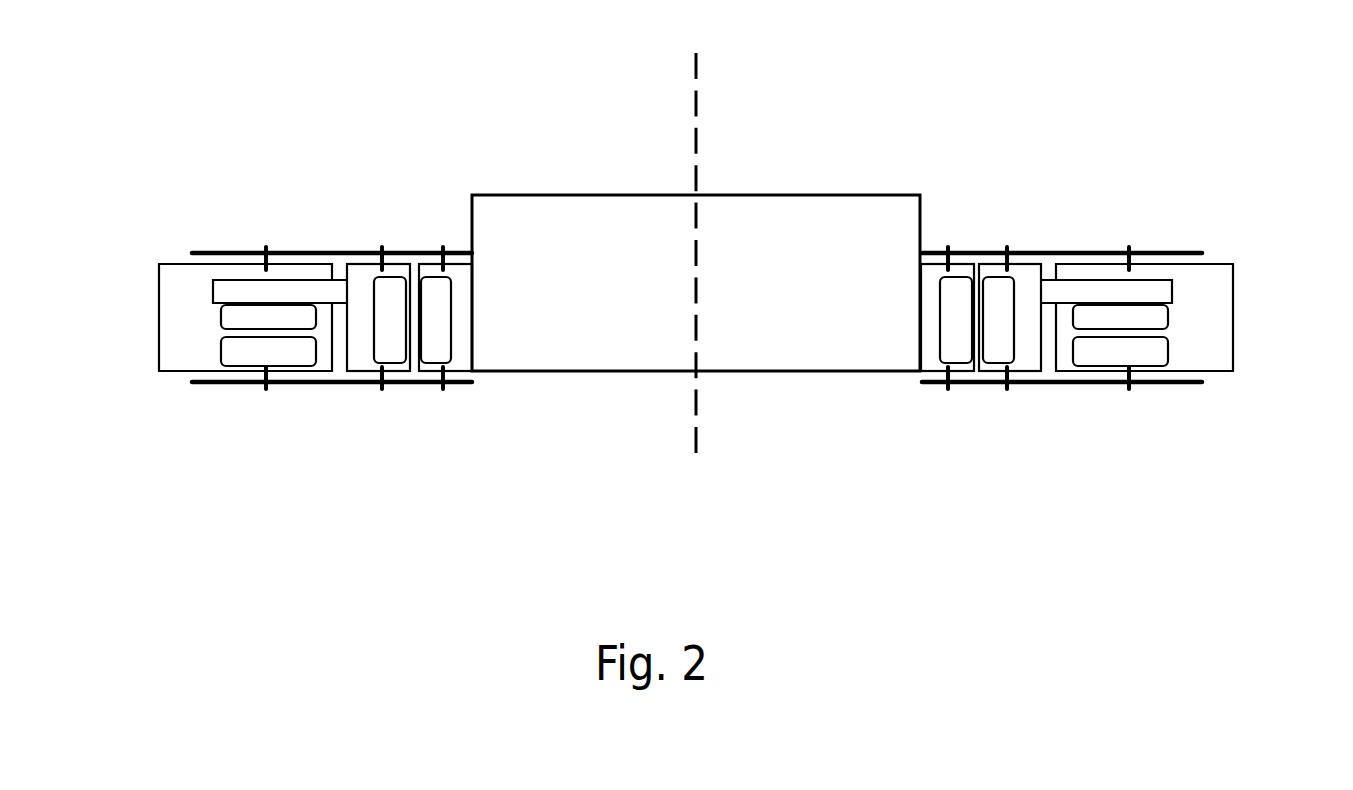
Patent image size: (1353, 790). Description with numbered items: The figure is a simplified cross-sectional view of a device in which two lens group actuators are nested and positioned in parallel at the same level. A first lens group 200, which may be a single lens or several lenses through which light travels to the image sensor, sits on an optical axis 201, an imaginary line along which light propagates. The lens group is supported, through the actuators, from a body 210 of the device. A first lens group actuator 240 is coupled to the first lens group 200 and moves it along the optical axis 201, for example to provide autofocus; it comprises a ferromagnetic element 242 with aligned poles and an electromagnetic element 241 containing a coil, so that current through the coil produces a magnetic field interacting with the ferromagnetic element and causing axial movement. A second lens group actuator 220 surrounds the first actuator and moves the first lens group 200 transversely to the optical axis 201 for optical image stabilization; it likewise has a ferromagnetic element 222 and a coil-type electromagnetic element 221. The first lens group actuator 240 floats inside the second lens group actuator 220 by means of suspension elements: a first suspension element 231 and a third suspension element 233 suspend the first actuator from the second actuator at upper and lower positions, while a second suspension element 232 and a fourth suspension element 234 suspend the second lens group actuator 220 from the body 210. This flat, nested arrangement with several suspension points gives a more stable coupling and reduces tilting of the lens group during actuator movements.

The first lens group 200 is at (737, 333).
The optical axis 201 is at (697, 136).
The body 210 is at (170, 353).
The second lens group actuator 220 is at (188, 312).
The electromagnetic element 221 is at (245, 355).
The ferromagnetic element 222 is at (249, 310).
The first suspension element 231 is at (972, 251).
The second suspension element 232 is at (1100, 251).
The third suspension element 233 is at (975, 383).
The fourth suspension element 234 is at (1095, 385).
The first lens group actuator 240 is at (400, 401).
The electromagnetic element 241 is at (440, 333).
The ferromagnetic element 242 is at (390, 285).